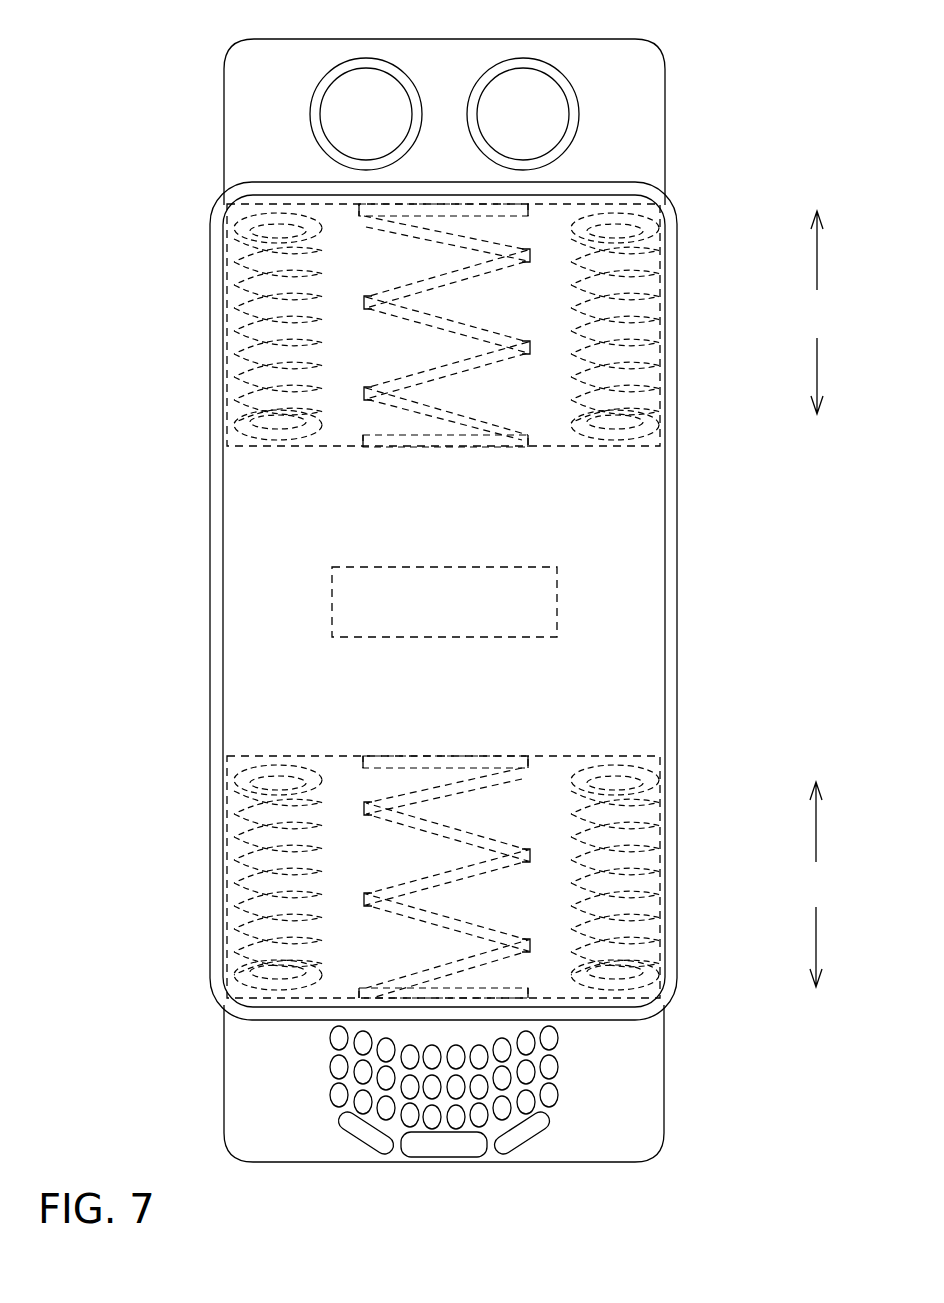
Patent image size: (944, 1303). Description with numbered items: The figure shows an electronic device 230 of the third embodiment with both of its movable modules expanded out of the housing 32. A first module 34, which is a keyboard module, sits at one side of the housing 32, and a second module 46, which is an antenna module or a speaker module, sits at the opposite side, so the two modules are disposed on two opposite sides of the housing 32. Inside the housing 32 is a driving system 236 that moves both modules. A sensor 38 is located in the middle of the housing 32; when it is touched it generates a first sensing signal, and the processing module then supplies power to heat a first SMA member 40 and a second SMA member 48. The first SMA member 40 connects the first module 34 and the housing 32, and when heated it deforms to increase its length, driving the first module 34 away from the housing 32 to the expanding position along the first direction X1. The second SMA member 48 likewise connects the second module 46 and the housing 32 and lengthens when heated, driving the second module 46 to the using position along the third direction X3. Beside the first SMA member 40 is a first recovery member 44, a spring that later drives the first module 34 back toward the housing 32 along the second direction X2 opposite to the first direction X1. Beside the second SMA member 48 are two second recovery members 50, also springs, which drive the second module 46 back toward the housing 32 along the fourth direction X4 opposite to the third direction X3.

The electronic device 230 is at (712, 98).
The housing 32 is at (678, 610).
The first module 34 is at (635, 1085).
The second module 46 is at (253, 114).
The driving system 236 is at (152, 390).
The sensor 38 is at (331, 602).
The second SMA member 48 is at (375, 400).
The first SMA member 40 is at (368, 804).
The second recovery members 50 is at (240, 421).
The first recovery member 44 is at (243, 780).
The first direction X1 is at (797, 947).
The second direction X2 is at (797, 822).
The third direction X3 is at (797, 250).
The fourth direction X4 is at (797, 376).